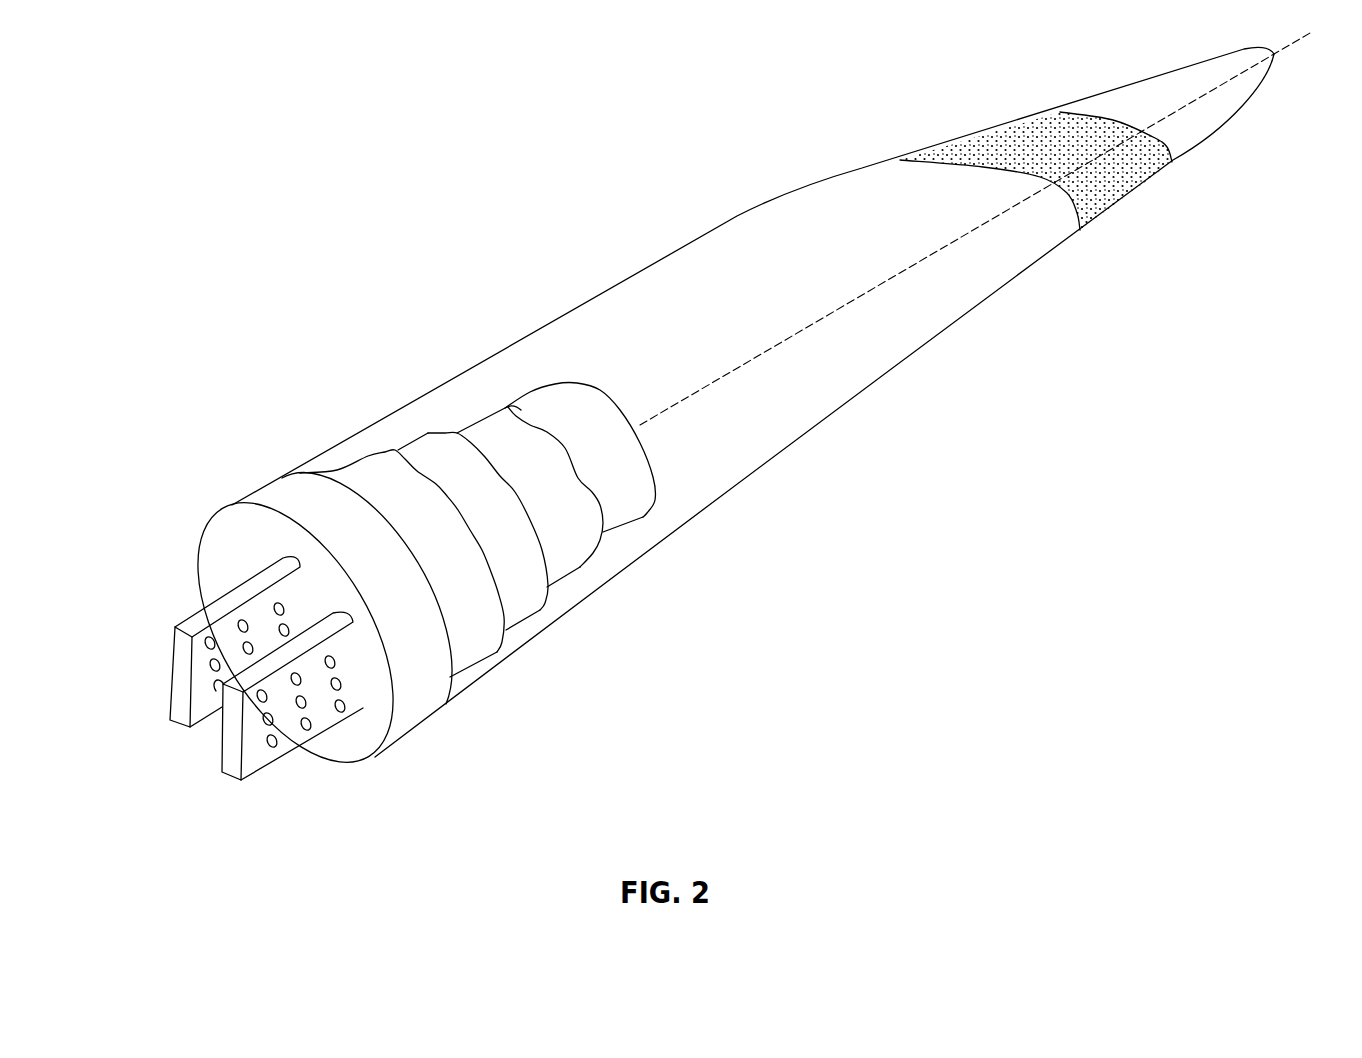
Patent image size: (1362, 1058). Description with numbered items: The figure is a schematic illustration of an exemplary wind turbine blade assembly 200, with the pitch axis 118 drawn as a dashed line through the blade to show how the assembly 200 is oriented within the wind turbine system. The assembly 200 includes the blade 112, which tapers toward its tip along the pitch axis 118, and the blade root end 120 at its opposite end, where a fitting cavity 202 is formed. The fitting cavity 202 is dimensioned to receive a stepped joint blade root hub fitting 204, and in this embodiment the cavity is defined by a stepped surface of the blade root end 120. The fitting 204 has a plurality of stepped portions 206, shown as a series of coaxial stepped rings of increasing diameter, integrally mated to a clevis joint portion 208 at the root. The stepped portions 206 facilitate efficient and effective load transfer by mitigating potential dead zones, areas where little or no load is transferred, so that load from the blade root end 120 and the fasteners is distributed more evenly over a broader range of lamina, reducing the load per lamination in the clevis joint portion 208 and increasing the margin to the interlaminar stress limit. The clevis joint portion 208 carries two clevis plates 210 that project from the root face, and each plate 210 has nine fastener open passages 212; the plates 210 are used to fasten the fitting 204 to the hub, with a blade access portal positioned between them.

The wind turbine blade assembly 200 is at (197, 272).
The blade 112 is at (920, 353).
The pitch axis 118 is at (1284, 47).
The blade root end 120 is at (690, 524).
The fitting cavity 202 is at (521, 393).
The stepped joint blade root hub fitting 204 is at (345, 353).
The stepped portions 206 is at (437, 448).
The clevis joint portion 208 is at (278, 490).
The clevis plates 210 is at (190, 623).
The fastener open passages 212 is at (218, 690).